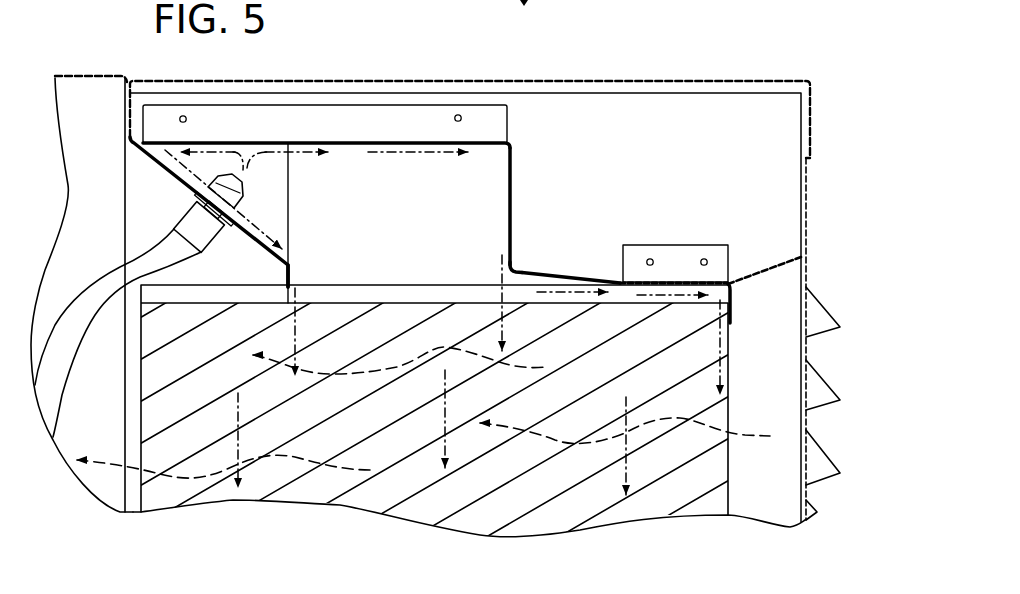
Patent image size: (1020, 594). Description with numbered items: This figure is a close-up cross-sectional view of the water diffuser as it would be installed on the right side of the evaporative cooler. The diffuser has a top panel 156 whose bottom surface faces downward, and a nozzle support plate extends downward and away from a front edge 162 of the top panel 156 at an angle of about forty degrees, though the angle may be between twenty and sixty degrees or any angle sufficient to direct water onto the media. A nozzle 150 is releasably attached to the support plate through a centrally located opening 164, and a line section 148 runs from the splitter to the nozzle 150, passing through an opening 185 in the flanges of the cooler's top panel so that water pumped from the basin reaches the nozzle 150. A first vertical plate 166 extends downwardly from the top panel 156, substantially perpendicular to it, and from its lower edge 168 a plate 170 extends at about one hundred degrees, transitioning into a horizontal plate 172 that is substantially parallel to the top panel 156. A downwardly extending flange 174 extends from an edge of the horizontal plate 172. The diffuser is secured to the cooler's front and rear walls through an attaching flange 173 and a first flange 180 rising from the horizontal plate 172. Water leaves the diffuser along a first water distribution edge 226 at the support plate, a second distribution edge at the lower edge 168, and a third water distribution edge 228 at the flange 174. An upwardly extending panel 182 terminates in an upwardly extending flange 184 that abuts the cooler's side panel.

The line section 148 is at (83, 290).
The nozzle 150 is at (191, 211).
The top panel 156 is at (482, 141).
The front edge 162 is at (140, 142).
The opening 164 is at (230, 226).
The first vertical plate 166 is at (514, 205).
The lower edge 168 is at (513, 262).
The plate 170 is at (572, 278).
The horizontal plate 172 is at (689, 281).
The attaching flange 173 is at (356, 108).
The downwardly extending flange 174 is at (734, 306).
The first flange 180 is at (670, 248).
The upwardly extending panel 182 is at (768, 264).
The upwardly extending flange 184 is at (806, 237).
The opening 185 is at (130, 210).
The first water distribution edge 226 is at (291, 264).
The third water distribution edge 228 is at (734, 323).